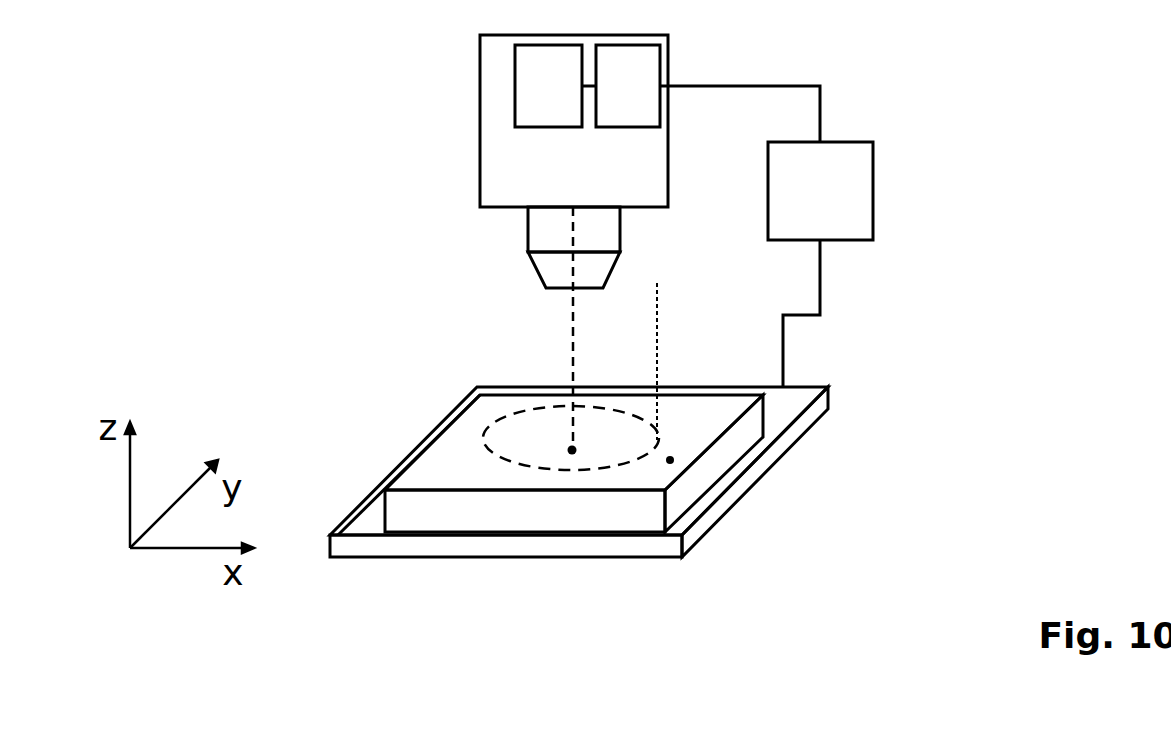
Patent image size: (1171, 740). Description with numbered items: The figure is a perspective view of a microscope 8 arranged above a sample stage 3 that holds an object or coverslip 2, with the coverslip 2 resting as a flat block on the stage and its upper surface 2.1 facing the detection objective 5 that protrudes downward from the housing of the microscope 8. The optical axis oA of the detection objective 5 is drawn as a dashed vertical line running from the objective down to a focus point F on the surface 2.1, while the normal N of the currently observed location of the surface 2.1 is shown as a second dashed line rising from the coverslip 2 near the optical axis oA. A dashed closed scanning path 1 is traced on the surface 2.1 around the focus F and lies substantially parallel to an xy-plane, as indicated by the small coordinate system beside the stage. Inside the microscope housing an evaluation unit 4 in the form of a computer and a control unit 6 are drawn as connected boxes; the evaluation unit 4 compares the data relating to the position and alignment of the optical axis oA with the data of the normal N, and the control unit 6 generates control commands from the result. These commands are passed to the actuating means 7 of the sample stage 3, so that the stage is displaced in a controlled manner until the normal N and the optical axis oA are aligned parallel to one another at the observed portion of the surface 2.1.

The scanning path 1 is at (485, 443).
The coverslip 2 is at (715, 458).
The surface 2.1 is at (672, 463).
The sample stage 3 is at (822, 397).
The evaluation unit 4 is at (536, 106).
The detection objective 5 is at (620, 240).
The control unit 6 is at (615, 106).
The actuating means 7 is at (808, 213).
The microscope 8 is at (518, 182).
The focal point F is at (571, 448).
The optical axis oA is at (574, 345).
The normal N is at (657, 318).